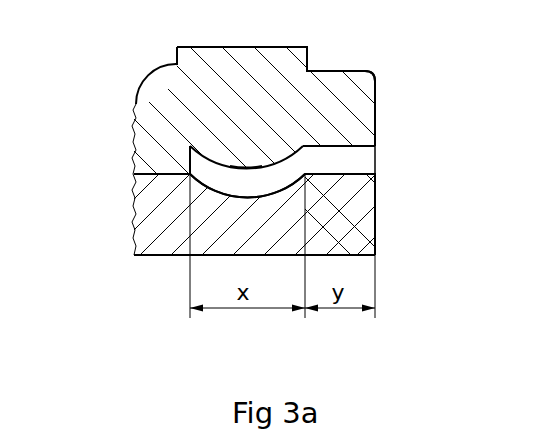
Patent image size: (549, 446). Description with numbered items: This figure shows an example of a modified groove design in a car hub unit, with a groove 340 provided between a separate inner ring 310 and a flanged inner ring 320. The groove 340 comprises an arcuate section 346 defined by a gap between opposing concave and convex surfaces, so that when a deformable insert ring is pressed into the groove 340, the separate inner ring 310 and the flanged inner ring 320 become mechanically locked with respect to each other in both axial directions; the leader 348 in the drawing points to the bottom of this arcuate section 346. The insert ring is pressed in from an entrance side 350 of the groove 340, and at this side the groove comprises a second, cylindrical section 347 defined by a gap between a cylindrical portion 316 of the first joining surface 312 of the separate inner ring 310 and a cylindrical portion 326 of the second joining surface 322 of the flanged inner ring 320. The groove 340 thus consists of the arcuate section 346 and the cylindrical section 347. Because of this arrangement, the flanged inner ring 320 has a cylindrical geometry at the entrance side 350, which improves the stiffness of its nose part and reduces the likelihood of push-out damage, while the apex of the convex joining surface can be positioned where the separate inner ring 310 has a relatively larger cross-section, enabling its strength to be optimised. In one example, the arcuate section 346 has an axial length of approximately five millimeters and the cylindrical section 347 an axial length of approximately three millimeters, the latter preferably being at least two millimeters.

The separate inner ring 310 is at (158, 132).
The flanged inner ring 320 is at (172, 207).
The first joining surface 312 is at (347, 146).
The cylindrical portion of the first joining surface 316 is at (330, 128).
The second joining surface 322 is at (343, 180).
The cylindrical portion of the second joining surface 326 is at (368, 255).
The groove 340 is at (378, 157).
The arcuate section 346 is at (263, 190).
The cylindrical section 347 is at (348, 168).
The groove bottom 348 is at (247, 168).
The entrance side 350 is at (438, 202).